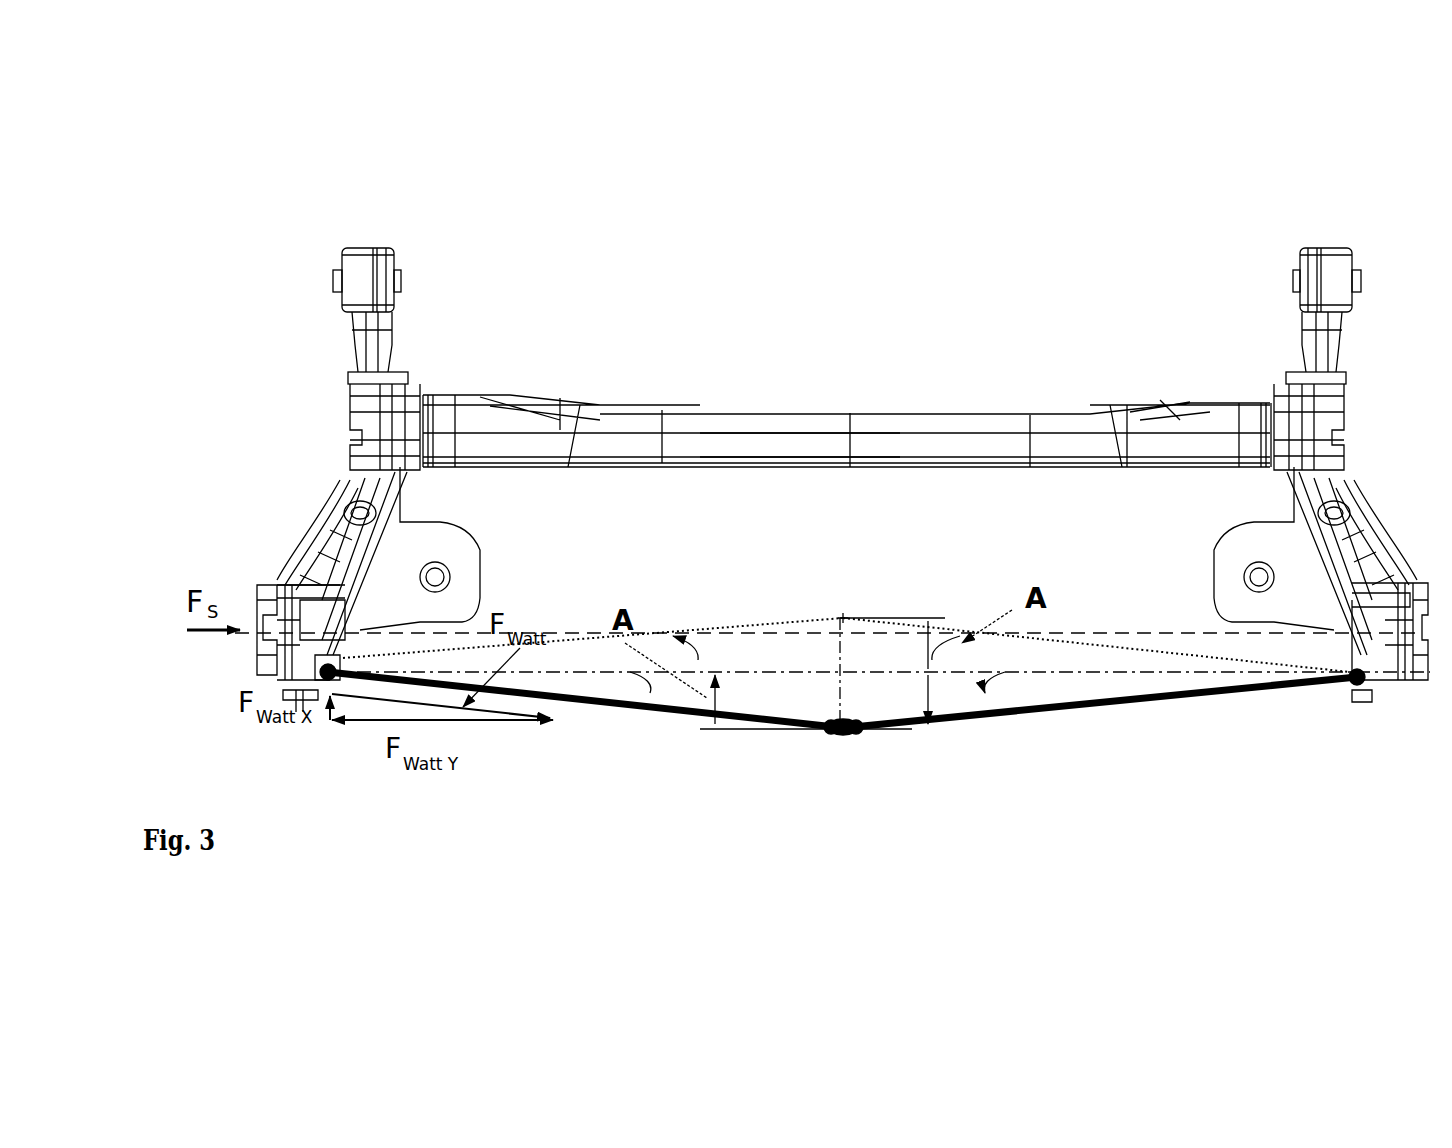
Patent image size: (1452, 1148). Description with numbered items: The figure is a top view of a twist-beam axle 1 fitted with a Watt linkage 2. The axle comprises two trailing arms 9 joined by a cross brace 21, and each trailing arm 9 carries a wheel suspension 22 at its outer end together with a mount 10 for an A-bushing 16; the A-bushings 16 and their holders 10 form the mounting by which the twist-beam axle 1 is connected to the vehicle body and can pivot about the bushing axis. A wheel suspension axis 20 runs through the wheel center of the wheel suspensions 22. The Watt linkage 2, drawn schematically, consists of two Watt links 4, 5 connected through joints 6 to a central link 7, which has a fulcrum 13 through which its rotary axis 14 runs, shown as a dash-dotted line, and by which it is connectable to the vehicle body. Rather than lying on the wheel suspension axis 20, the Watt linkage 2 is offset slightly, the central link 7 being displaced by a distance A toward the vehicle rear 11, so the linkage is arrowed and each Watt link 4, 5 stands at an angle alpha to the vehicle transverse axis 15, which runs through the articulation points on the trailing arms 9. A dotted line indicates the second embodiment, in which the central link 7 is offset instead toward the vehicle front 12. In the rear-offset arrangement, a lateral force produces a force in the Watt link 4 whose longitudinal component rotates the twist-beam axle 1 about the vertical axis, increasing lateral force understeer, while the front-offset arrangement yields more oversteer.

The twist-beam axle 1 is at (690, 400).
The Watt linkage 2 is at (842, 673).
The Watt link 4 is at (725, 628).
The Watt link 5 is at (1080, 648).
The joints 6 is at (820, 735).
The central link 7 is at (840, 740).
The trailing arms 9 is at (322, 530).
The mount 10 is at (326, 247).
The vehicle rear 11 is at (820, 873).
The vehicle front 12 is at (820, 253).
The fulcrum 13 is at (840, 727).
The rotary axis 14 is at (843, 622).
The vehicle transverse axis 15 is at (1100, 672).
The A-bushing 16 is at (411, 280).
The wheel suspension axis 20 is at (1165, 633).
The cross brace 21 is at (762, 433).
The wheel suspension 22 is at (258, 651).